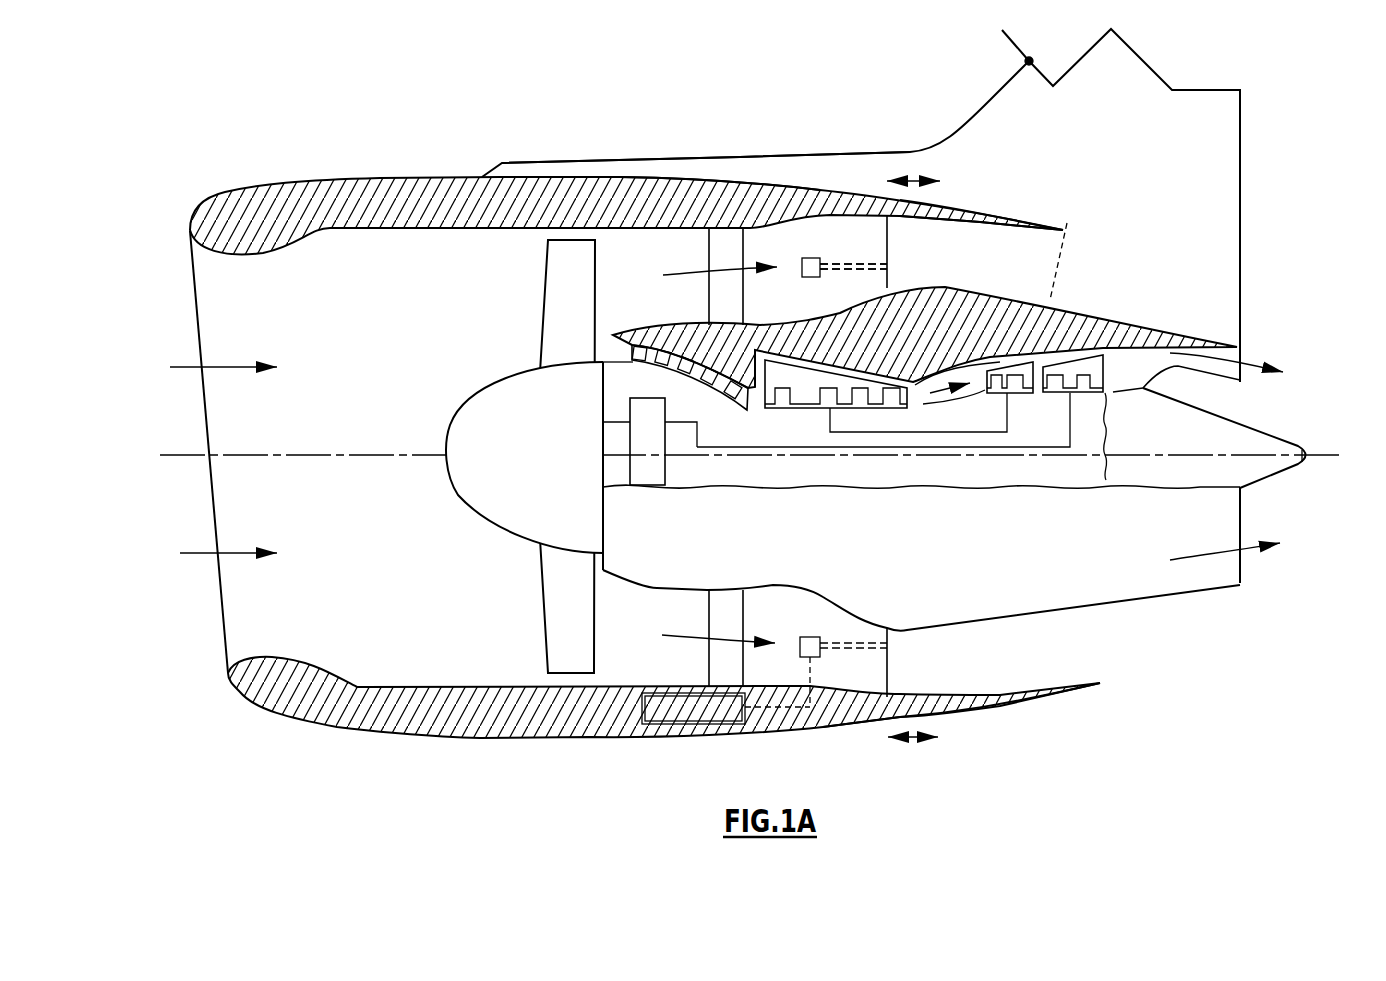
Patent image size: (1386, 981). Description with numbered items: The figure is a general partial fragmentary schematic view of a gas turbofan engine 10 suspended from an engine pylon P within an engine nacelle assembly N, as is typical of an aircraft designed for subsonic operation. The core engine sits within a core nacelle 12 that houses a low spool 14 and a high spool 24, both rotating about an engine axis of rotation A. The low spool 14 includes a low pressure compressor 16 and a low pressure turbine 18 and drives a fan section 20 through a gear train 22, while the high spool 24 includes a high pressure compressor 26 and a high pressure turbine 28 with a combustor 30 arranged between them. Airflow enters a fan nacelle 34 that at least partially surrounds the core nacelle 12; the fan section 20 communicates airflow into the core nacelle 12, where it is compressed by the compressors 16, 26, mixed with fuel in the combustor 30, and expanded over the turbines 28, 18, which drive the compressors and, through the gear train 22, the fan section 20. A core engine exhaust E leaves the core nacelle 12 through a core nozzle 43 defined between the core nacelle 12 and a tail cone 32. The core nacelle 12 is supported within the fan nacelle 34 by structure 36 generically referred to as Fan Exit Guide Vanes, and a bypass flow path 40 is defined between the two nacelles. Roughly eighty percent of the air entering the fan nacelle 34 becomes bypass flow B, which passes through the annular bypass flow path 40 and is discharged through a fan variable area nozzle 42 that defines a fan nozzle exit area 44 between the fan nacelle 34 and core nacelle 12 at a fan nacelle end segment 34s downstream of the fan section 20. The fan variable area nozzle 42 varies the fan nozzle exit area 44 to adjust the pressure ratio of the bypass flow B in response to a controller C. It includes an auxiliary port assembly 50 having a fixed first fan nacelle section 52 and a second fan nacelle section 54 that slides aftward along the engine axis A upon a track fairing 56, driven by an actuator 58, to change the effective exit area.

The gas turbofan engine 10 is at (720, 423).
The core nacelle 12 is at (1090, 313).
The low spool 14 is at (962, 488).
The low pressure compressor 16 is at (727, 397).
The low pressure turbine 18 is at (1110, 404).
The fan section 20 is at (553, 608).
The gear train 22 is at (643, 457).
The high spool 24 is at (867, 434).
The high pressure compressor 26 is at (813, 393).
The high pressure turbine 28 is at (1023, 393).
The combustor 30 is at (958, 402).
The tail cone 32 is at (1243, 430).
The fan nacelle 34 is at (628, 207).
The fan nacelle end segment 34s is at (664, 737).
The structure (Fan Exit Guide Vanes) 36 is at (733, 302).
The bypass flow path 40 is at (626, 268).
The fan variable area nozzle 42 is at (823, 740).
The core nozzle 43 is at (1240, 357).
The fan nozzle exit area 44 is at (1055, 277).
The auxiliary port assembly 50 is at (938, 163).
The first fan nacelle section 52 is at (827, 187).
The second fan nacelle section 54 is at (973, 208).
The track fairing 56 is at (860, 271).
The actuator 58 is at (817, 257).
The engine nacelle assembly N is at (707, 165).
The engine pylon P is at (1213, 170).
The bypass flow B is at (690, 634).
The controller C is at (708, 724).
The core engine exhaust E is at (1228, 557).
The engine axis of rotation A is at (1340, 457).